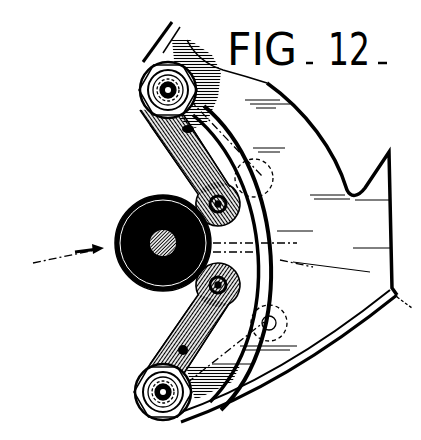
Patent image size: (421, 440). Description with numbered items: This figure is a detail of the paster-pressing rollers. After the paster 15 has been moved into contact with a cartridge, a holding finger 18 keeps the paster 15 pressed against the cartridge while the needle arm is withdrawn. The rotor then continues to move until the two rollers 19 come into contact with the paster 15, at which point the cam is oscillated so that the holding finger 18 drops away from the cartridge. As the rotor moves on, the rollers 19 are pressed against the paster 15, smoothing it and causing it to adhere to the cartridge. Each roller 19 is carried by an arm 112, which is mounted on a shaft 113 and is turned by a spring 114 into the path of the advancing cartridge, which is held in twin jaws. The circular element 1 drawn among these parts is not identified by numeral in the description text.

The wheel disc 1 is at (125, 211).
The paster 15 is at (180, 178).
The holding finger 18 is at (276, 249).
The paster-pressing roller 19 is at (228, 215).
The arm 112 is at (183, 152).
The shaft 113 is at (142, 89).
The spring 114 is at (186, 131).